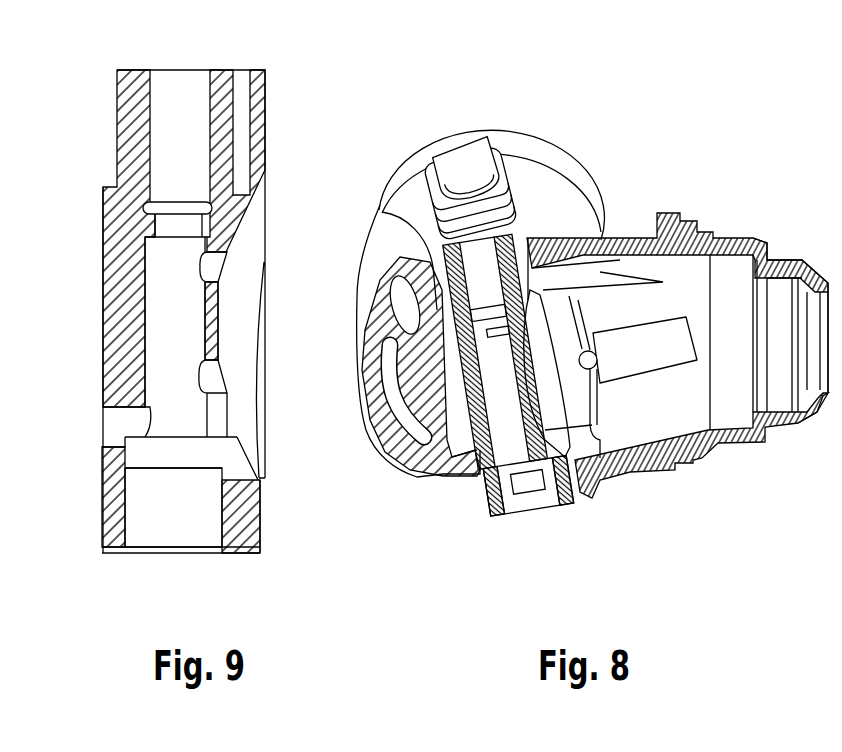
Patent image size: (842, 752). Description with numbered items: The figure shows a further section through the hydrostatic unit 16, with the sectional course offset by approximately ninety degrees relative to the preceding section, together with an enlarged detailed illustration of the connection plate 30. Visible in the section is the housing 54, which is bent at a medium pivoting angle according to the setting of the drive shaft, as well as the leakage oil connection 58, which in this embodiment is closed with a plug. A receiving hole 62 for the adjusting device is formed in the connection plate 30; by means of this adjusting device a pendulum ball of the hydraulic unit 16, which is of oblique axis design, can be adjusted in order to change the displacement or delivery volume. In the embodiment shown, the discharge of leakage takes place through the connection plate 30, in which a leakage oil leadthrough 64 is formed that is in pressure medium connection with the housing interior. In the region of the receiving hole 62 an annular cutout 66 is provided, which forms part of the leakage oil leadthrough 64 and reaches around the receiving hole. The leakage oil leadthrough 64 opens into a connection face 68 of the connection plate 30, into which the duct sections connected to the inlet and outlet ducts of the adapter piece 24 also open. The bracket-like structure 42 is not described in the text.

In FIG. 8, the hydrostatic unit 16 is at (627, 186).
In FIG. 8, the adapter piece 24 is at (559, 151).
In FIG. 9, the connection plate 30 is at (257, 98).
In FIG. 8, the connection plate 30 is at (445, 440).
In FIG. 8, the bracket 42 is at (384, 446).
In FIG. 8, the housing 54 is at (738, 240).
In FIG. 8, the leakage oil connection 58 is at (593, 352).
In FIG. 9, the receiving hole 62 is at (150, 90).
In FIG. 8, the receiving hole 62 is at (514, 470).
In FIG. 9, the leakage oil leadthrough 64 is at (102, 454).
In FIG. 8, the leakage oil leadthrough 64 is at (572, 498).
In FIG. 9, the annular cutout 66 is at (153, 467).
In FIG. 9, the connection face 68 is at (102, 213).